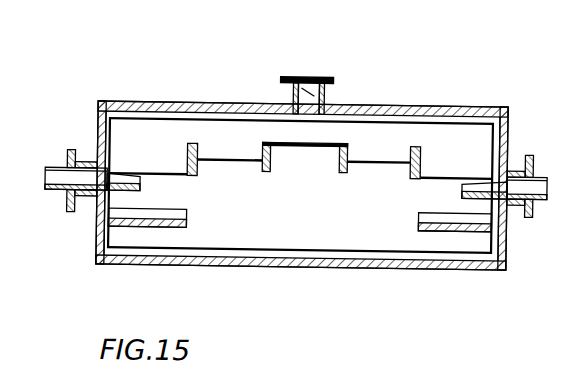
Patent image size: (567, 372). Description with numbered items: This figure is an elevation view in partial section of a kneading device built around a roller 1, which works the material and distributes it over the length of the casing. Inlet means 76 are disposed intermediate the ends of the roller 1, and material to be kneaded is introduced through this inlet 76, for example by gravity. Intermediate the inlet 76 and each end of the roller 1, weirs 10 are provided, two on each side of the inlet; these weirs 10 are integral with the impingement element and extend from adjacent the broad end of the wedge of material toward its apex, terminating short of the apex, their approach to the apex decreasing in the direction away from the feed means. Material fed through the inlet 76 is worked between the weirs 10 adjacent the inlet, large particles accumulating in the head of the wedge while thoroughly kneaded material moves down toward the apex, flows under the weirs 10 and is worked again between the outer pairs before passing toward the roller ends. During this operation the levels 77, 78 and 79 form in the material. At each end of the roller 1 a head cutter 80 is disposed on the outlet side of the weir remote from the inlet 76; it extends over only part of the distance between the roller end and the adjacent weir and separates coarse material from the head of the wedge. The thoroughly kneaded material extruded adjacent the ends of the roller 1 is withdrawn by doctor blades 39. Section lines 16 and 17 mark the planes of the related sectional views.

The roller 1 is at (415, 133).
The weirs 10 is at (410, 174).
The doctor blades 39 is at (128, 225).
The inlet means 76 is at (322, 77).
The level 77 is at (293, 143).
The level 78 is at (215, 161).
The level 79 is at (150, 176).
The head cutter 80 is at (97, 213).
The section line 16- 16 is at (271, 88).
The section line 17- 17 is at (487, 97).